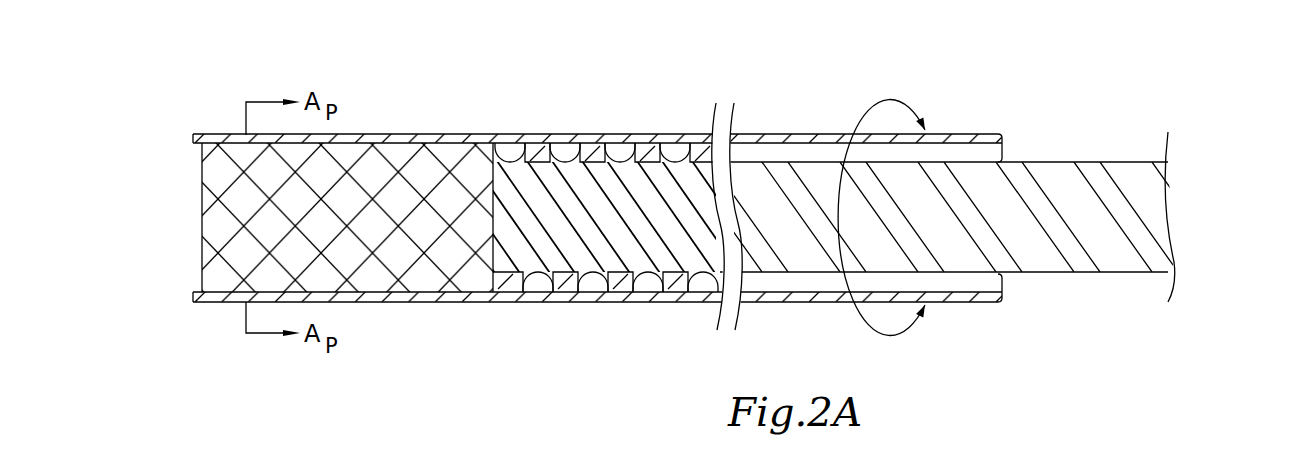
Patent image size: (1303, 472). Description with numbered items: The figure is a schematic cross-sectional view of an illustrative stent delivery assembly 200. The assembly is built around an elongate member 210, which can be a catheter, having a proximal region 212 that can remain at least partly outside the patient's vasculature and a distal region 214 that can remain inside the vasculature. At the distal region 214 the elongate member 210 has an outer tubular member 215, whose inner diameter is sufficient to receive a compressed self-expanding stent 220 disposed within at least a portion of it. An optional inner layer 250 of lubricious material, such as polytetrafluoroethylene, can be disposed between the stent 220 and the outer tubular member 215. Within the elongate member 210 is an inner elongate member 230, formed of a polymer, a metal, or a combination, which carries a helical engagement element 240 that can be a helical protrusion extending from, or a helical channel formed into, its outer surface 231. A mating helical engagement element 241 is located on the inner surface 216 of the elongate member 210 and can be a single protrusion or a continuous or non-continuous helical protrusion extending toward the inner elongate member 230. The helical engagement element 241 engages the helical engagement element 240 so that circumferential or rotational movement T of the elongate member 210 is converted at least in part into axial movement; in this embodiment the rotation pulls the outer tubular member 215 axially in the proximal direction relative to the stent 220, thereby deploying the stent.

The stent delivery assembly 200 is at (197, 96).
The elongate member 210 is at (680, 103).
The proximal region 212 is at (1002, 115).
The distal region 214 is at (372, 88).
The outer tubular member 215 is at (408, 132).
The inner surface 216 is at (497, 140).
The self-expanding stent 220 is at (372, 257).
The inner elongate member 230 is at (1032, 258).
The outer surface 231 is at (573, 276).
The helical engagement element 240 is at (587, 270).
The helical engagement element 241 is at (542, 152).
The inner layer 250 is at (220, 295).
The circumferential movement T is at (881, 201).